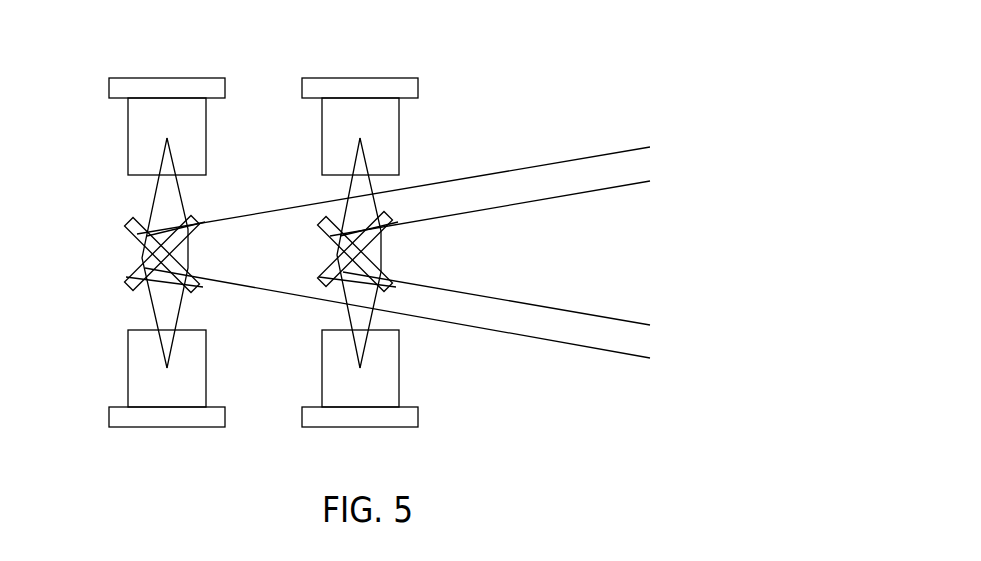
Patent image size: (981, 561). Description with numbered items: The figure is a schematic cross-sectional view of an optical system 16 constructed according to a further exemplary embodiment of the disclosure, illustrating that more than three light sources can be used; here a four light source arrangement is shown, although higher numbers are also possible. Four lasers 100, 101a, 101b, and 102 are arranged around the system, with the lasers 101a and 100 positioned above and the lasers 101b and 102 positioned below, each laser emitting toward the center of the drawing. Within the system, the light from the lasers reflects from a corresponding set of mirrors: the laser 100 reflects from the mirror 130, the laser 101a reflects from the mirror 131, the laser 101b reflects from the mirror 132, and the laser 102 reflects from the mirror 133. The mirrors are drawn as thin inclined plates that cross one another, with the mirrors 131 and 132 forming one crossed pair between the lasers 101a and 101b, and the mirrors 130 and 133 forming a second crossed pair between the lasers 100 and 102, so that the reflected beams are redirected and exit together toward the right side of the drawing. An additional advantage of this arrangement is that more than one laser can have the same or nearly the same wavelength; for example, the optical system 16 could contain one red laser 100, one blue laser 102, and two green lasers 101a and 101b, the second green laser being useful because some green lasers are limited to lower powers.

The optical system 16 is at (388, 296).
The laser 100 is at (417, 89).
The laser 101a is at (112, 88).
The laser 101b is at (130, 371).
The laser 102 is at (417, 412).
The mirror 130 is at (327, 227).
The mirror 131 is at (129, 224).
The mirror 132 is at (129, 283).
The mirror 133 is at (323, 274).